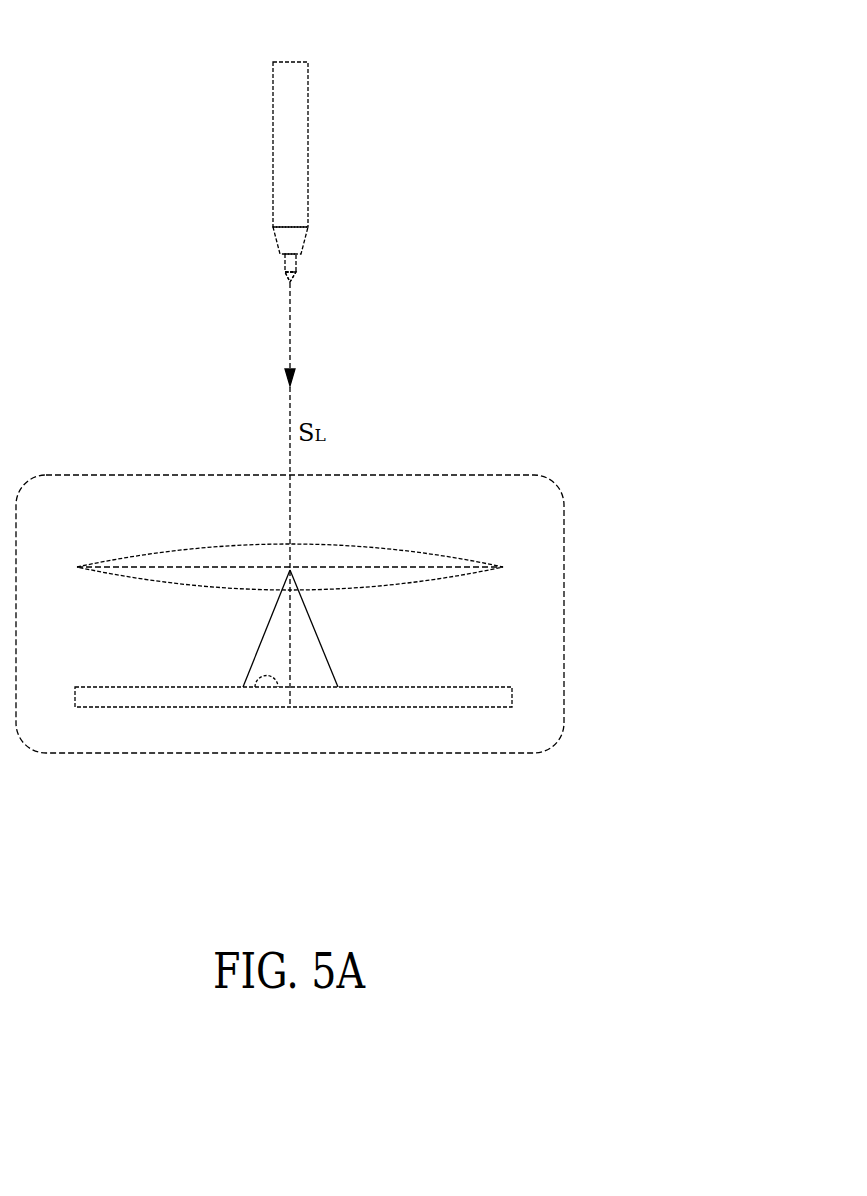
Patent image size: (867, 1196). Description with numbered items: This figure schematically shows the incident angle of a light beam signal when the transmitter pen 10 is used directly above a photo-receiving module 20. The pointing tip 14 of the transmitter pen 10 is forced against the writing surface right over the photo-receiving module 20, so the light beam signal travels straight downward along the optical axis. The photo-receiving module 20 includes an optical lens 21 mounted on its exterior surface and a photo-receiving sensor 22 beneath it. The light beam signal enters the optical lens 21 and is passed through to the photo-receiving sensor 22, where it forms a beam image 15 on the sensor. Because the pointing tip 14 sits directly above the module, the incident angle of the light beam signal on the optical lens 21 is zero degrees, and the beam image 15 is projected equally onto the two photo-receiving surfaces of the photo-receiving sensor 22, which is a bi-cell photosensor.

The transmitter pen 10 is at (313, 58).
The pointing tip 14 is at (291, 283).
The beam image 15 is at (257, 687).
The photo-receiving module 20 is at (556, 484).
The optical lens 21 is at (182, 548).
The photo-receiving sensor 22 is at (497, 687).